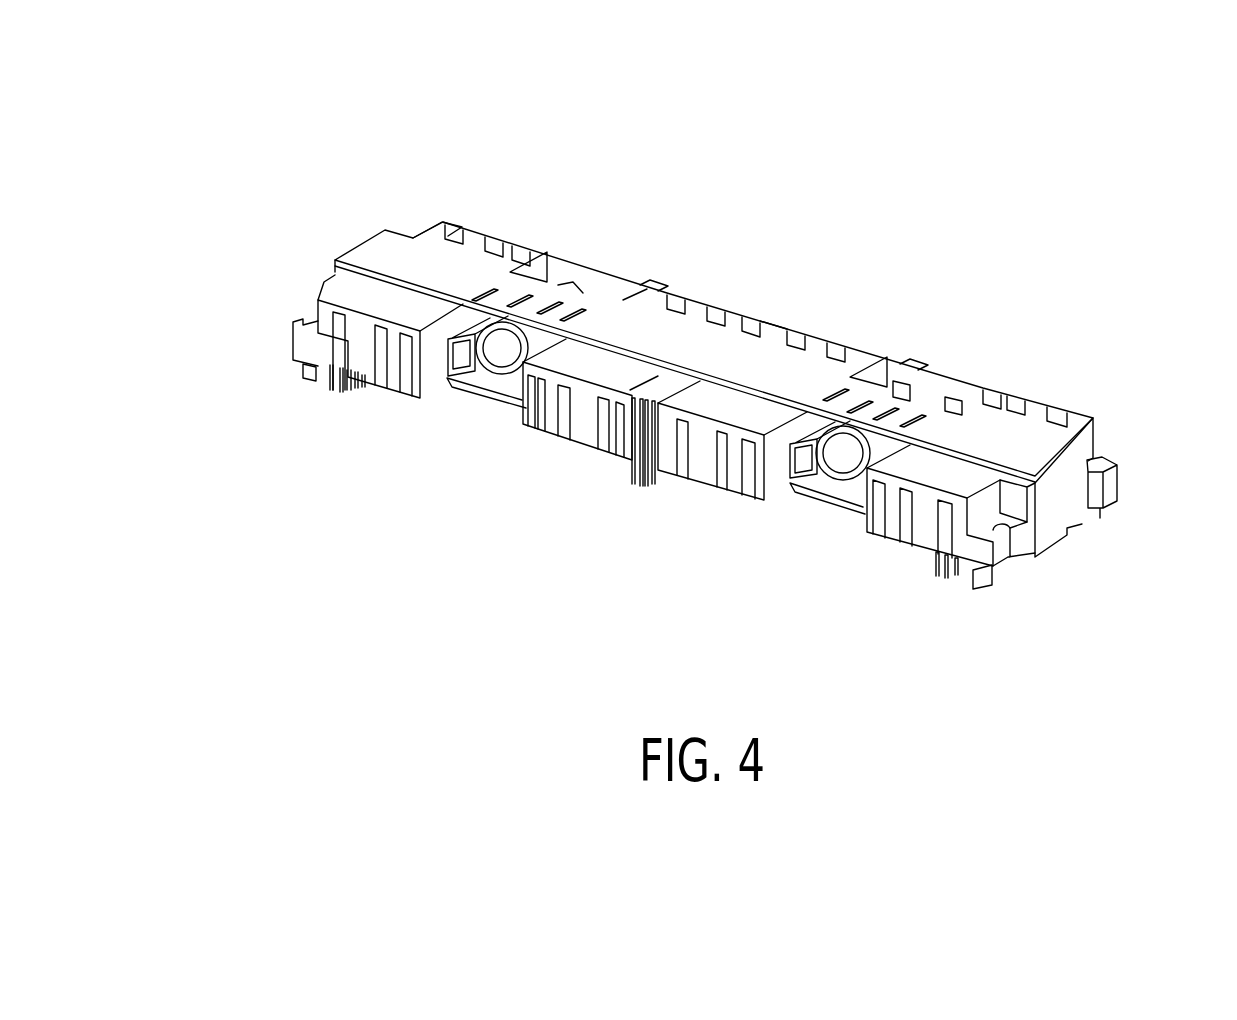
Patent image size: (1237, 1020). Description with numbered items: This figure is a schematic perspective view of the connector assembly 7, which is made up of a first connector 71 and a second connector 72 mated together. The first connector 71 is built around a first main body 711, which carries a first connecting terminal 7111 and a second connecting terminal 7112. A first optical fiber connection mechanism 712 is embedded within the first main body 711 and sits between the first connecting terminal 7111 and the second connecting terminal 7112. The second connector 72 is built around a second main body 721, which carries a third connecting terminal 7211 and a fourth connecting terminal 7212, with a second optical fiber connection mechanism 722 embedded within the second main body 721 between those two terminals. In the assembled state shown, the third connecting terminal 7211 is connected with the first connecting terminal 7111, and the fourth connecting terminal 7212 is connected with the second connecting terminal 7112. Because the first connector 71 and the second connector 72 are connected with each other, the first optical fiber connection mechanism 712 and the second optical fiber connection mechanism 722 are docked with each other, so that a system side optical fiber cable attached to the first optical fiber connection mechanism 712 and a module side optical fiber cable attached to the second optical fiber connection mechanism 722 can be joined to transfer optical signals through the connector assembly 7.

The connector assembly 7 is at (1212, 124).
The first connector 71 is at (357, 297).
The first main body 711 is at (1028, 553).
The first connecting terminal 7111 is at (948, 575).
The second connecting terminal 7112 is at (650, 486).
The first optical fiber connection mechanism 712 is at (848, 500).
The second connector 72 is at (370, 250).
The second main body 721 is at (1057, 521).
The third connecting terminal 7211 is at (1090, 405).
The fourth connecting terminal 7212 is at (783, 307).
The second optical fiber connection mechanism 722 is at (955, 407).